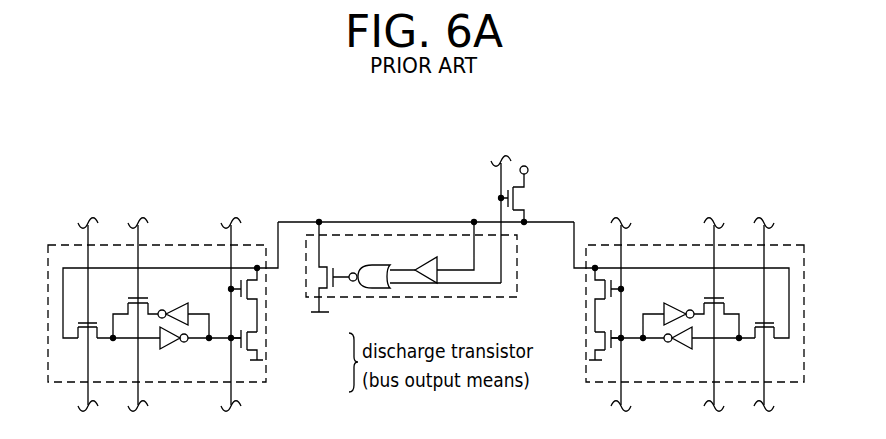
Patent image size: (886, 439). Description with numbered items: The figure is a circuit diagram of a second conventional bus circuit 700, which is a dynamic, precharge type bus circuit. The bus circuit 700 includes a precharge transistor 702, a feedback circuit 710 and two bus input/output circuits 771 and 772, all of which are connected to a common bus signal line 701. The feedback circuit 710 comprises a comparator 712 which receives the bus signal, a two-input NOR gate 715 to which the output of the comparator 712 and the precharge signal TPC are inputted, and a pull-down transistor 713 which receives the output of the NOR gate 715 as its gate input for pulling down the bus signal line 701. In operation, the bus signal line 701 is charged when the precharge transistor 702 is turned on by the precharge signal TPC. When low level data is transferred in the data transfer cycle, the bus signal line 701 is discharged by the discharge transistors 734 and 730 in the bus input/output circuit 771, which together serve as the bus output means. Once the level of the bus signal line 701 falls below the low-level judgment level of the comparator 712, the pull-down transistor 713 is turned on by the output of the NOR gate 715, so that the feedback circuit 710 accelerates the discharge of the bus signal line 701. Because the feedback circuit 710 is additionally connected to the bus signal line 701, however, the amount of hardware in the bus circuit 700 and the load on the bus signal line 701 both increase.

The bus circuit 700 is at (620, 95).
The bus signal line 701 is at (562, 222).
The precharge transistor 702 is at (523, 198).
The feedback circuit 710 is at (343, 220).
The comparator 712 is at (419, 212).
The pull-down transistor 713 is at (325, 280).
The 2-input NOR gate 715 is at (368, 265).
The discharge transistor 730 is at (263, 340).
The discharge transistor 734 is at (255, 289).
The bus input/output circuit 771 is at (106, 243).
The bus input/output circuit 772 is at (744, 244).